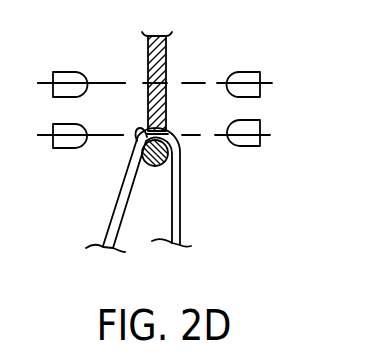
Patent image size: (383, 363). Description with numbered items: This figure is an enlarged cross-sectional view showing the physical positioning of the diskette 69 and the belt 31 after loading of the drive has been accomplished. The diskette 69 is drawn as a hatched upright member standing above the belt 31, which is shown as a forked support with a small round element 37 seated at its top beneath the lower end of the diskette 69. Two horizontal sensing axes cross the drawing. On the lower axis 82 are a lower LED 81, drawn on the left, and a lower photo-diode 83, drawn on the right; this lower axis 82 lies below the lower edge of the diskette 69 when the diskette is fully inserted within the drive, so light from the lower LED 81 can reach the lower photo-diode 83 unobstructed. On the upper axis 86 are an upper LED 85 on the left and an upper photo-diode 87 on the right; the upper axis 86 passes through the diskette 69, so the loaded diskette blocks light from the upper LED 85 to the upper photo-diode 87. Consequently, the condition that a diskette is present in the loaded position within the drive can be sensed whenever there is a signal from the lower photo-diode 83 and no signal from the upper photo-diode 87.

The belt 31 is at (180, 218).
The ball 37 is at (137, 139).
The diskette 69 is at (167, 62).
The lower LED 81 is at (53, 148).
The lower axis 82 is at (103, 135).
The lower photo-diode 83 is at (260, 146).
The upper LED 85 is at (53, 72).
The upper axis 86 is at (106, 83).
The upper photo-diode 87 is at (260, 72).